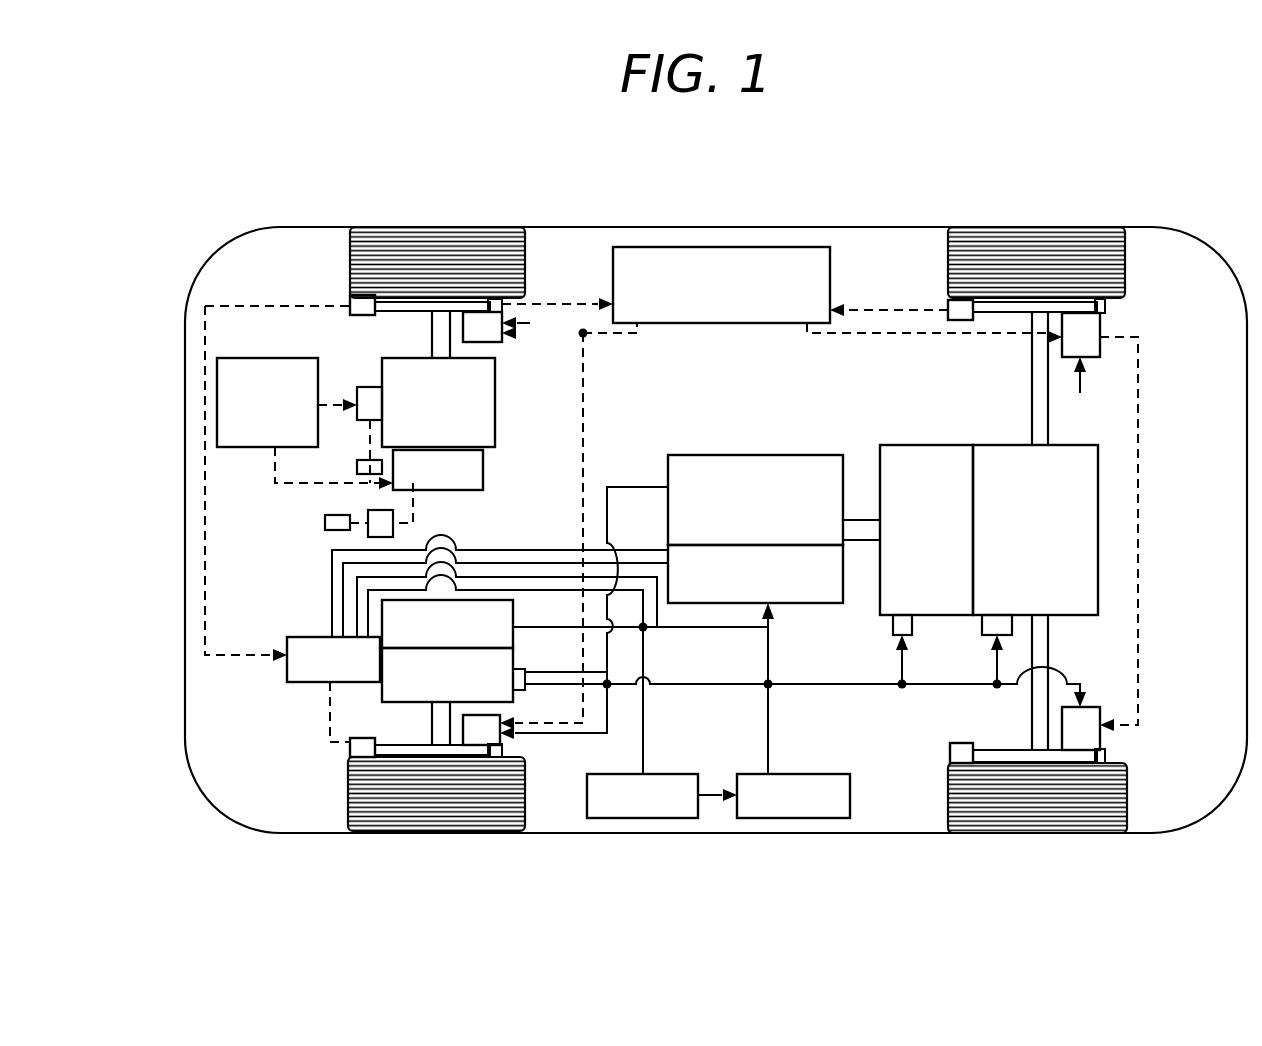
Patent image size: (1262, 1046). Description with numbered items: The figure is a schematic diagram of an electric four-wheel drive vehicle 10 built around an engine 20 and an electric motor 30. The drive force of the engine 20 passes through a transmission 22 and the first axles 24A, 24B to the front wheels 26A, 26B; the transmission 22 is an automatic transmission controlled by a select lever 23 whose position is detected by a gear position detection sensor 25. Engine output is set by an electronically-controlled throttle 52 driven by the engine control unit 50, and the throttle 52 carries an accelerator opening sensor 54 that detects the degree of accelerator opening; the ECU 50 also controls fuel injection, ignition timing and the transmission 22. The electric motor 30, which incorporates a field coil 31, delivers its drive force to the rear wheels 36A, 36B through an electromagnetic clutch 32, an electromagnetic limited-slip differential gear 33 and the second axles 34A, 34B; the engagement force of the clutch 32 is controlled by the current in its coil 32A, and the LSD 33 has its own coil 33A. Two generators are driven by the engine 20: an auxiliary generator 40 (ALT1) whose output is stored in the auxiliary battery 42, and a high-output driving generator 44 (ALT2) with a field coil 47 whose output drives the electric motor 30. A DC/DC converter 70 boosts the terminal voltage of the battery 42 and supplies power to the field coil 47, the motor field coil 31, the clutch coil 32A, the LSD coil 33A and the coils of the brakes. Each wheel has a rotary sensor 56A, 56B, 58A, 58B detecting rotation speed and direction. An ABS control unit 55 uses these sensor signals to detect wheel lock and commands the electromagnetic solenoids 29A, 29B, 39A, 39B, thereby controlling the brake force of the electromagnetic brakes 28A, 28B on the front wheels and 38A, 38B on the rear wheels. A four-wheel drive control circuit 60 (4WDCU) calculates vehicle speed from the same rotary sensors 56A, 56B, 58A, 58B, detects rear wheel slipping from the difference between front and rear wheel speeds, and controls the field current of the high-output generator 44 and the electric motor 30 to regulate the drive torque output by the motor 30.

The four-wheel drive vehicle 10 is at (250, 335).
The engine 20 is at (495, 416).
The transmission 22 is at (483, 472).
The select lever 23 is at (368, 514).
The first axle 24A is at (432, 350).
The first axle 24B is at (437, 722).
The gear position detection sensor 25 is at (330, 530).
The front wheel 26A is at (466, 240).
The front wheel 26B is at (483, 820).
The electromagnetic brake 28A is at (490, 300).
The electromagnetic brake 28B is at (400, 757).
The electromagnetic solenoid 29A is at (483, 342).
The electromagnetic solenoid 29B is at (485, 738).
The electric motor 30 is at (748, 458).
The electric motor field coil 31 is at (795, 605).
The electromagnetic clutch 32 is at (895, 450).
The electromagnetic clutch coil 32A is at (893, 630).
The electromagnetic limited-slip differential gear 33 is at (1097, 462).
The coil of the electromagnetic limited-slip differential gear 33A is at (983, 630).
The second axle 34A is at (1032, 396).
The second axle 34B is at (1045, 656).
The rear wheel 36A is at (1060, 240).
The rear wheel 36B is at (1068, 835).
The electromagnetic brake 38A is at (1105, 307).
The electromagnetic brake 38B is at (1105, 757).
The electromagnetic solenoid 39A is at (1100, 337).
The electromagnetic solenoid 39B is at (1100, 745).
The auxiliary generator 40 is at (513, 606).
The auxiliary battery 42 is at (672, 774).
The high-output driving generator 44 is at (380, 697).
The field coil of the high-output driving generator 47 is at (527, 678).
The engine control unit 50 is at (217, 405).
The electronically-controlled throttle 52 is at (364, 386).
The accelerator opening sensor 54 is at (357, 466).
The ABS control unit 55 is at (697, 325).
The rotary sensor 56A is at (350, 300).
The rotary sensor 56B is at (350, 752).
The rotary sensor 58A is at (948, 305).
The rotary sensor 58B is at (950, 754).
The four-wheel drive control circuit 60 is at (295, 637).
The DC/DC converter 70 is at (825, 774).